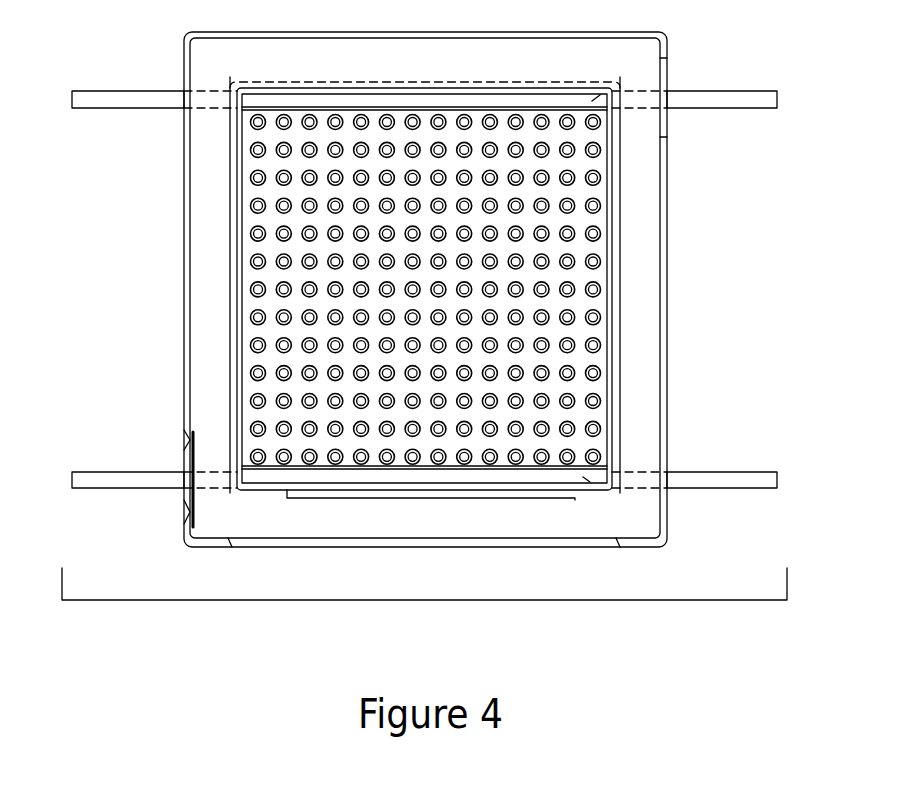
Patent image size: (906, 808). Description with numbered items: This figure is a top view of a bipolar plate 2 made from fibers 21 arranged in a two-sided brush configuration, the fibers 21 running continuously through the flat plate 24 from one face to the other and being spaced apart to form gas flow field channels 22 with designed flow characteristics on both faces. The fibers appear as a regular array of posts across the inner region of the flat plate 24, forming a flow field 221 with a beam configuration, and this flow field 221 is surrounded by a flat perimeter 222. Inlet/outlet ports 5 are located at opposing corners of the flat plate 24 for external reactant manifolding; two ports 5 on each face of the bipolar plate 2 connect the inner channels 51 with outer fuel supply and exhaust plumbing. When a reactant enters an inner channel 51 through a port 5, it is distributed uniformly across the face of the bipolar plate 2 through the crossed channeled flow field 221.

The bipolar plate 2 is at (408, 600).
The inlet/outlet port 5 is at (72, 100).
The fiber 21 is at (250, 260).
The flow field channel 22 is at (270, 329).
The flow field 221 is at (230, 385).
The flat perimeter 222 is at (222, 187).
The flat plate 24 is at (668, 289).
The inner channel 51 is at (592, 101).